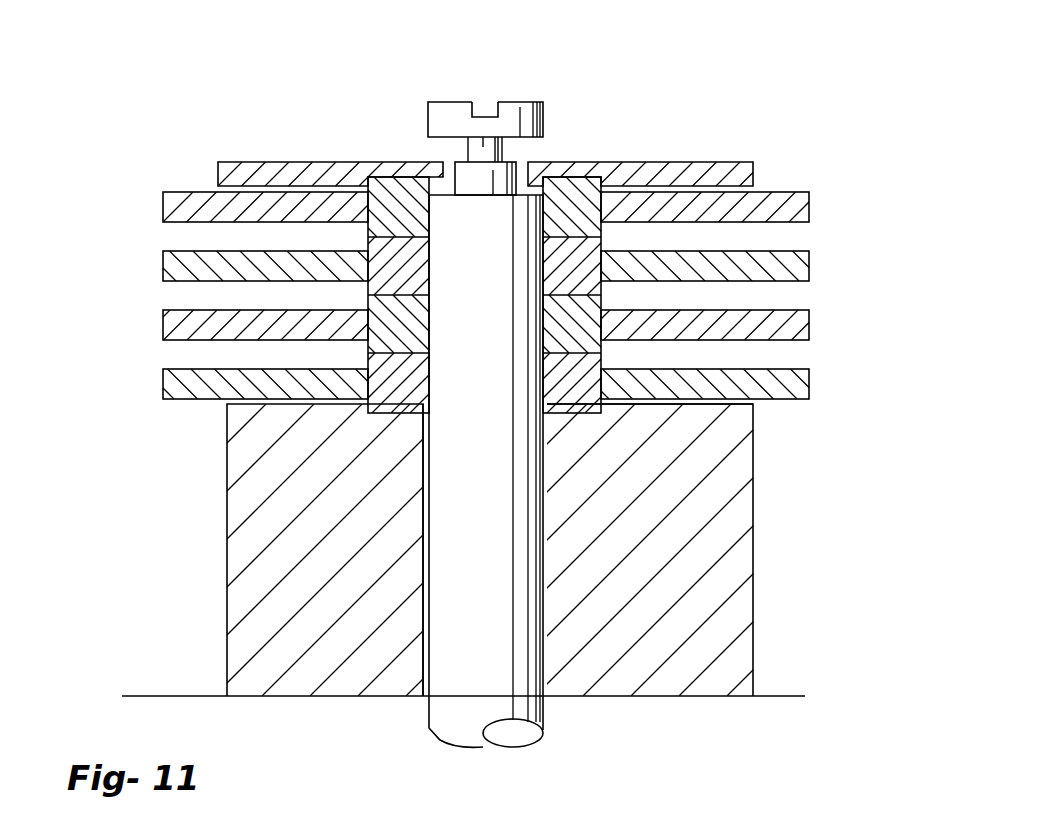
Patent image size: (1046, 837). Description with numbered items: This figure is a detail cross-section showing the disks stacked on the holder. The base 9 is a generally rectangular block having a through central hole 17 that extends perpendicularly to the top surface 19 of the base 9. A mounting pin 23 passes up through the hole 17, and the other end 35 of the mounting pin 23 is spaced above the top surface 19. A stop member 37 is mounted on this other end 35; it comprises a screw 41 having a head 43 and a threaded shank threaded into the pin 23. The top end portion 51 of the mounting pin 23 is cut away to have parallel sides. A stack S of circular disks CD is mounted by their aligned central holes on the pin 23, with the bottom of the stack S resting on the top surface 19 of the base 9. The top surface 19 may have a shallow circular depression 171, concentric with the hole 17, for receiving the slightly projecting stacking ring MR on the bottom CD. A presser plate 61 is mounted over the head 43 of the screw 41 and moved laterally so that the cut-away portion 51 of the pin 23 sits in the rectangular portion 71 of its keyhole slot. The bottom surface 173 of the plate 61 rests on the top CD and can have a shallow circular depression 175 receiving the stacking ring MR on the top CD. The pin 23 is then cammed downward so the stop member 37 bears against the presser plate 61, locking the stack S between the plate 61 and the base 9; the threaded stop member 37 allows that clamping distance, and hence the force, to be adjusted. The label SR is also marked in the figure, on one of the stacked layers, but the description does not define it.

The base 9 is at (758, 566).
The through central hole 17 is at (413, 672).
The top surface 19 is at (677, 404).
The mounting pin 23 is at (536, 419).
The other end 35 is at (460, 158).
The stop member 37 is at (467, 81).
The screw 41 is at (452, 96).
The head 43 is at (438, 75).
The top end portion 51 is at (547, 160).
The presser plate 61 is at (439, 144).
The rectangular portion 71 is at (256, 177).
The shallow circular depression 171 is at (387, 413).
The bottom surface 173 is at (240, 190).
The shallow circular depression 175 is at (592, 173).
The stack S is at (815, 191).
The circular disk CD is at (810, 260).
The separator ring SR is at (592, 360).
The stacking ring MR is at (351, 355).